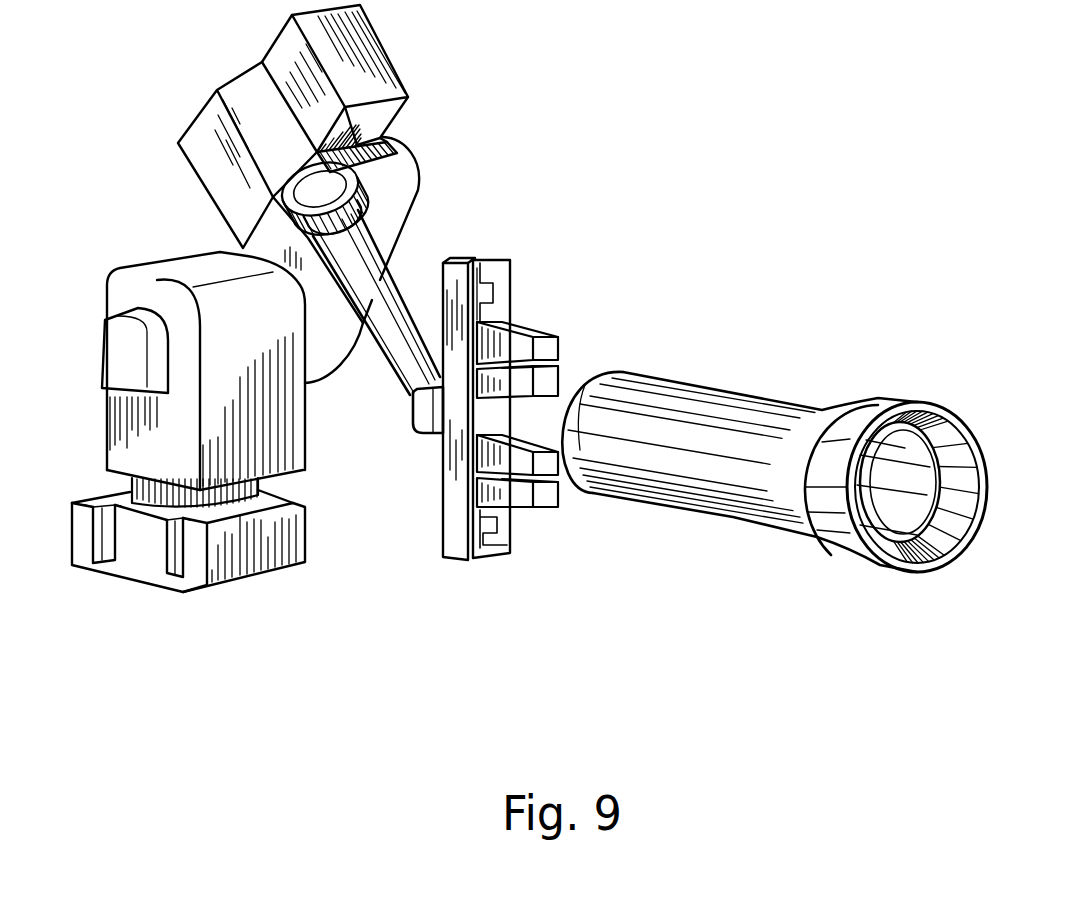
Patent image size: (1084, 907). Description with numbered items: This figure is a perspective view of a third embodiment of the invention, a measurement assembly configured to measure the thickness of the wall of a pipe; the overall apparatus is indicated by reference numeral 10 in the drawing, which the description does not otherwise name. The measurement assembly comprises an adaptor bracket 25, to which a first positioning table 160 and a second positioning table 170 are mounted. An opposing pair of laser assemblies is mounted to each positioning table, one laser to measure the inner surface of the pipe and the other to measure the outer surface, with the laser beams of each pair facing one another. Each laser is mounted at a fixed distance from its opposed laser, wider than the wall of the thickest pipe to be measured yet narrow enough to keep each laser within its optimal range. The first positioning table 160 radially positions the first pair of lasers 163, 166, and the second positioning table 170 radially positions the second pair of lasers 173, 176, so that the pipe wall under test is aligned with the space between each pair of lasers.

The robotic actuator assembly 10 is at (253, 604).
The adaptor bracket 25 is at (490, 258).
The first positioning table 160 is at (514, 431).
The laser 163 is at (497, 466).
The laser 166 is at (499, 502).
The second positioning table 170 is at (507, 292).
The laser 173 is at (545, 323).
The laser 176 is at (495, 383).